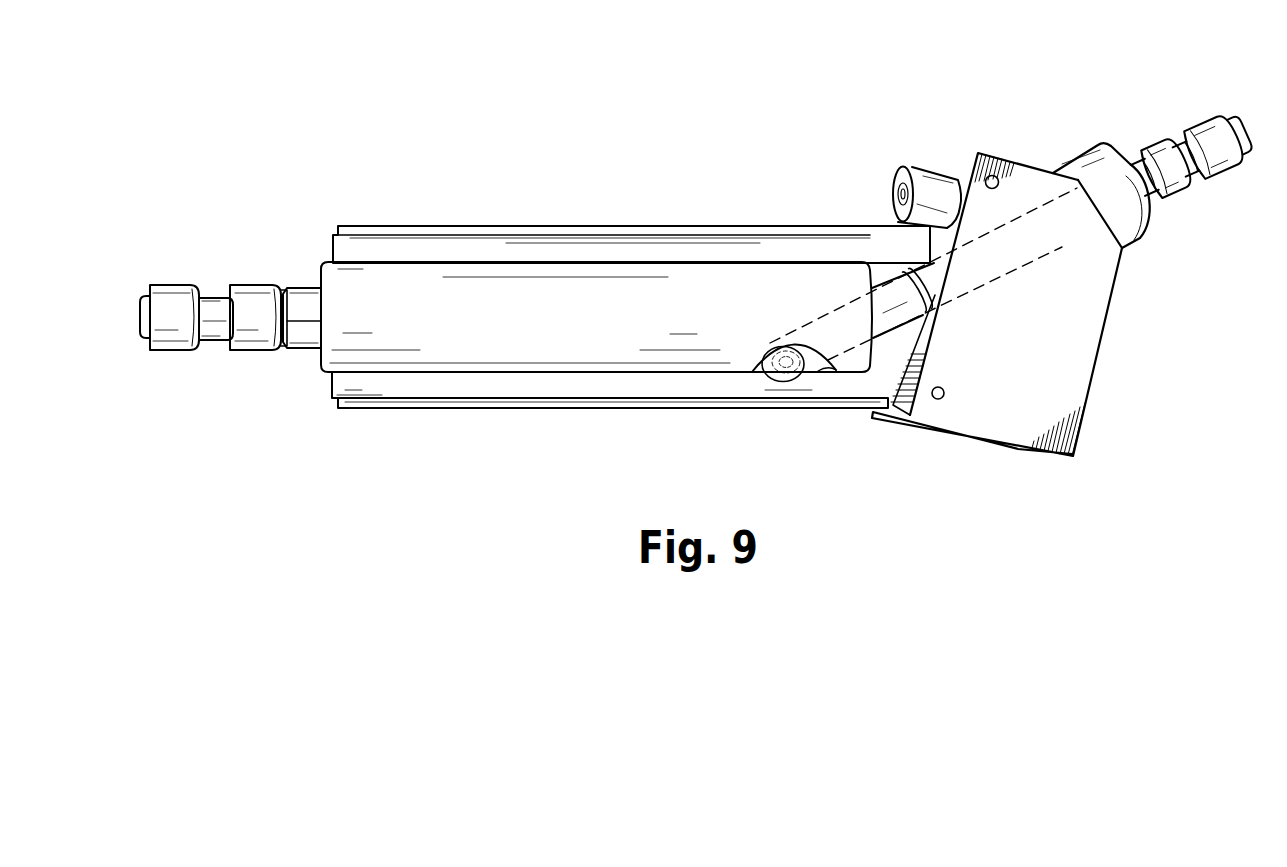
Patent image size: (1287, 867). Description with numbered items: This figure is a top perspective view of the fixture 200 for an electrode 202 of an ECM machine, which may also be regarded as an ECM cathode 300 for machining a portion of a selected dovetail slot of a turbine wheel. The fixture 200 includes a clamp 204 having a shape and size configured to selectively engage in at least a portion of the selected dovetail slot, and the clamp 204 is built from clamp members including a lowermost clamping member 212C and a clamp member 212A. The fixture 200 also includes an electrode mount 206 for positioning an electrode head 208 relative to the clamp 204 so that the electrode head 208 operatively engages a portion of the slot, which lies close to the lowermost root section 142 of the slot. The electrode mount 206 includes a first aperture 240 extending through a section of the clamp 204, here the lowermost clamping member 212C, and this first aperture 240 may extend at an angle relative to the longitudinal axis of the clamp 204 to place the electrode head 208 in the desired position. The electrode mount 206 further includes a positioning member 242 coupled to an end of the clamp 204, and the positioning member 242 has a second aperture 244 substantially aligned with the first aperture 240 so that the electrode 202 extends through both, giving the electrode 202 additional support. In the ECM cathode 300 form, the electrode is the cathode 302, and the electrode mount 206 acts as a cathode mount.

The fixture 200 is at (438, 106).
The ECM cathode 300 is at (698, 267).
The root section 142 is at (343, 475).
The clamp 204 is at (877, 223).
The lowermost clamping member 212C is at (474, 347).
The clamp member 212A is at (609, 403).
The electrode head 208 is at (795, 367).
The first aperture 240 is at (828, 365).
The electrode 202 is at (893, 262).
The cathode 302 is at (912, 223).
The positioning member 242 is at (1038, 329).
The second aperture 244 is at (1062, 247).
The electrode mount 206 is at (399, 360).